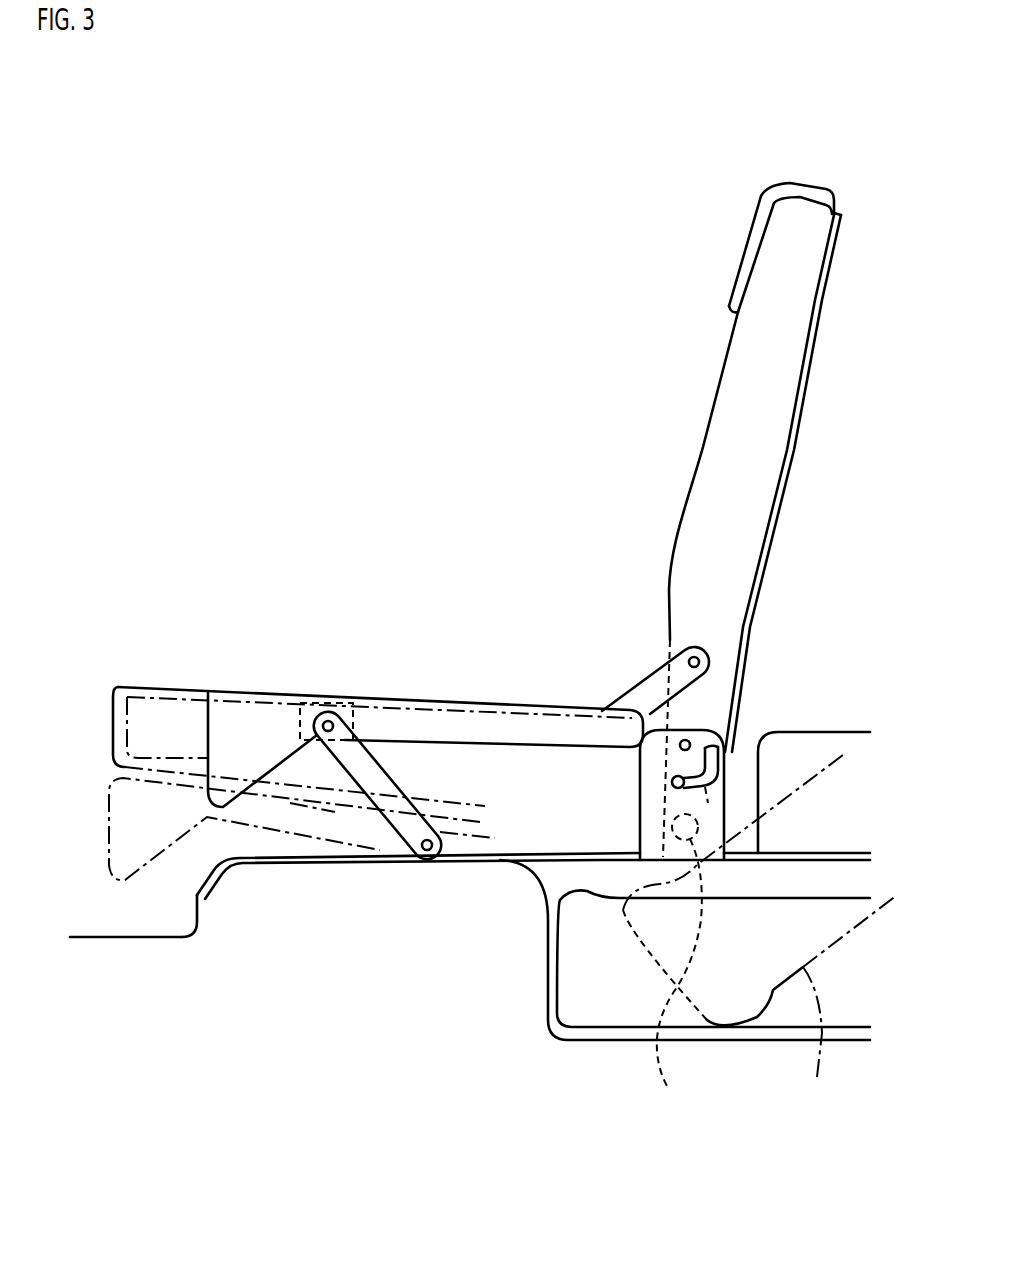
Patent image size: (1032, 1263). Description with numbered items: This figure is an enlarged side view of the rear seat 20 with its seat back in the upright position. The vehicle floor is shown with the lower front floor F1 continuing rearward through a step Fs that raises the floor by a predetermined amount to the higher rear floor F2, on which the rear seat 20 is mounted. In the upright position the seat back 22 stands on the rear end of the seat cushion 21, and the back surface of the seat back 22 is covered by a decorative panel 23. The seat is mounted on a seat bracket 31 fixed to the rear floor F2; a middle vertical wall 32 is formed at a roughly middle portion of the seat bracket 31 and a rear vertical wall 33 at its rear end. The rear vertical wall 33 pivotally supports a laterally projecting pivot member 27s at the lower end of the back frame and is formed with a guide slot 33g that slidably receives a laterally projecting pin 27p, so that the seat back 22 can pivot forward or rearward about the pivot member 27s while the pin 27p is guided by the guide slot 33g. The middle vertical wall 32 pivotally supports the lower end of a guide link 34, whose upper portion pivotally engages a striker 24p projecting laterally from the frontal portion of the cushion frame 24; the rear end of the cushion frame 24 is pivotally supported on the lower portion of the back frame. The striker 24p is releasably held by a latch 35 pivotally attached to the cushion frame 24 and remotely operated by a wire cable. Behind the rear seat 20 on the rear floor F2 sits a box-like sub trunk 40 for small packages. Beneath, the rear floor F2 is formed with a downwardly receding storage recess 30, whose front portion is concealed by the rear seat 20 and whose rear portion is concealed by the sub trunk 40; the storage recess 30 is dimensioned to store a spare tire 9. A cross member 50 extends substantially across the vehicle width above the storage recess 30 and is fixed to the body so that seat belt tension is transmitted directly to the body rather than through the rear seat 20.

The rear seat 20 is at (740, 214).
The seat cushion 21 is at (483, 699).
The seat back 22 is at (711, 398).
The decorative panel 23 is at (793, 450).
The cushion frame 24 is at (650, 673).
The striker 24p is at (328, 714).
The pivot member 27s is at (687, 740).
The pin 27p is at (676, 837).
The storage recess 30 is at (545, 982).
The seat bracket 31 is at (268, 858).
The middle vertical wall 32 is at (464, 858).
The rear vertical wall 33 is at (641, 800).
The guide slot 33g is at (722, 750).
The guide link 34 is at (358, 800).
The latch 35 is at (298, 700).
The sub trunk 40 is at (848, 729).
The cross member 50 is at (677, 978).
The spare tire 9 is at (788, 1030).
The front floor F1 is at (122, 937).
The step Fs is at (205, 905).
The rear floor F2 is at (364, 866).